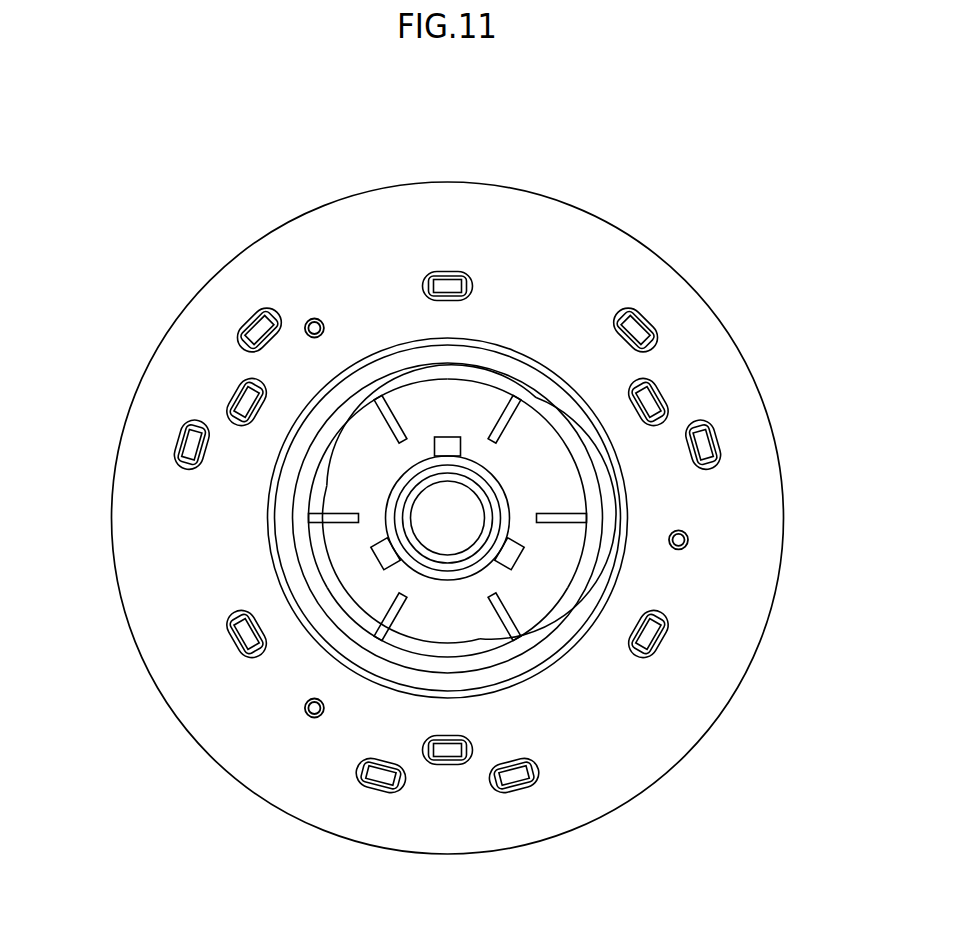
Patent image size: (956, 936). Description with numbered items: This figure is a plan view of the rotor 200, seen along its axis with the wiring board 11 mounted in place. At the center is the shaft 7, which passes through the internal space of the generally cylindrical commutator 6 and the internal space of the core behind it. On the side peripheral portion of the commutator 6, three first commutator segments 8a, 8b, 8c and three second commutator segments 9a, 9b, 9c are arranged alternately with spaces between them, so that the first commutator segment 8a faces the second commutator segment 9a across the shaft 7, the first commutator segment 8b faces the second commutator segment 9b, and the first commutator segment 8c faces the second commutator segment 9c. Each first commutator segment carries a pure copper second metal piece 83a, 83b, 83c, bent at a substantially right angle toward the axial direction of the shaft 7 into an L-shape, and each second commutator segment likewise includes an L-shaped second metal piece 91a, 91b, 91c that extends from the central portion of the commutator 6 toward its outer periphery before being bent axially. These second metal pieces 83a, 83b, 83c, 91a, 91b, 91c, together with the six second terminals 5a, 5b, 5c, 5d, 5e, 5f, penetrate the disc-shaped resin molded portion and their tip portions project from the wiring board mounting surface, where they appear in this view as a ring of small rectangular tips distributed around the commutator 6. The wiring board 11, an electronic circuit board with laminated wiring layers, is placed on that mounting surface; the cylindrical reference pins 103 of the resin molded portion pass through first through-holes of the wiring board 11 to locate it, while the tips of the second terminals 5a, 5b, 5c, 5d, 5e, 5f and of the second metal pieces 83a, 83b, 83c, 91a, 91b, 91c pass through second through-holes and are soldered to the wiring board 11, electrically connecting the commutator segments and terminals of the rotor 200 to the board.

The rotor 200 is at (755, 126).
The wiring board 11 is at (633, 778).
The shaft 7 is at (390, 533).
The commutator 6 is at (458, 415).
The first commutator segment 8a is at (344, 603).
The first commutator segment 8b is at (418, 390).
The first commutator segment 8c is at (562, 581).
The second commutator segment 9a is at (570, 456).
The second commutator segment 9b is at (406, 641).
The second commutator segment 9c is at (320, 484).
The reference pins 103 is at (308, 320).
The second metal piece 83a is at (236, 640).
The second metal piece 83b is at (447, 272).
The second metal piece 83c is at (660, 641).
The second metal piece 91a is at (660, 388).
The second metal piece 91b is at (446, 765).
The second metal piece 91c is at (230, 393).
The second terminal 5a is at (373, 787).
The second terminal 5b is at (178, 441).
The second terminal 5c is at (245, 322).
The second terminal 5d is at (642, 318).
The second terminal 5e is at (716, 441).
The second terminal 5f is at (518, 787).